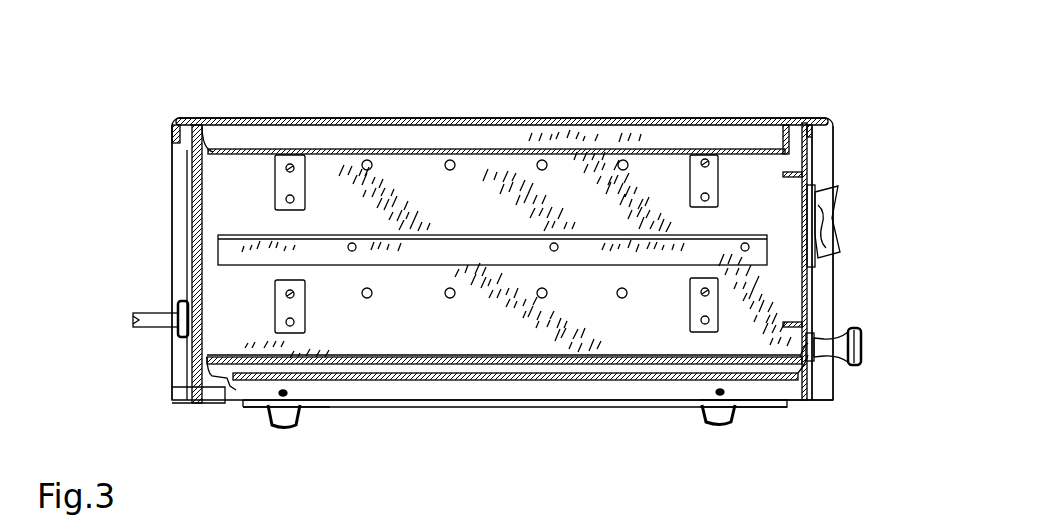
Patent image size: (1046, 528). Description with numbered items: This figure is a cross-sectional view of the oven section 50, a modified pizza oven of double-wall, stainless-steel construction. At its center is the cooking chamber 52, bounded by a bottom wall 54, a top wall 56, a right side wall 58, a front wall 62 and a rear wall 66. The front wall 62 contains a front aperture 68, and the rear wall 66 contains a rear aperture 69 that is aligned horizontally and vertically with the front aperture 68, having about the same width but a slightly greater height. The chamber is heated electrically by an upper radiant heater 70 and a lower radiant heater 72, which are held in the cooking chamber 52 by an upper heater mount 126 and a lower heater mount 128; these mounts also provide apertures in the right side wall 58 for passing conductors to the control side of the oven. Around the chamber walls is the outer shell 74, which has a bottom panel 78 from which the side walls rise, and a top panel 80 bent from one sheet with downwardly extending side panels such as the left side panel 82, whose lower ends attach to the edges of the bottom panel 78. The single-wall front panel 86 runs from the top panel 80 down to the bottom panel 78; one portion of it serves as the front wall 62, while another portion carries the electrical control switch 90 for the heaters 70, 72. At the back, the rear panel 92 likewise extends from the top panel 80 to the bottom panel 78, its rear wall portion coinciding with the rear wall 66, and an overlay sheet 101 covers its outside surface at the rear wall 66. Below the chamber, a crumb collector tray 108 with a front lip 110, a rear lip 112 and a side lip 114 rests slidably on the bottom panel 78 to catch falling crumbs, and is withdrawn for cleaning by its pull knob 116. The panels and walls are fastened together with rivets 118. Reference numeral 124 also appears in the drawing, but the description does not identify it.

The oven section 50 is at (736, 91).
The cooking chamber 52 is at (512, 185).
The bottom wall 54 is at (363, 393).
The top wall 56 is at (258, 149).
The right side wall 58 is at (423, 170).
The front wall 62 is at (808, 308).
The rear wall 66 is at (192, 263).
The front aperture 68 is at (783, 190).
The rear aperture 69 is at (187, 149).
The upper radiant heater 70 is at (643, 126).
The lower radiant heater 72 is at (450, 300).
The outer shell 74 is at (768, 117).
The bottom panel 78 is at (510, 380).
The top panel 80 is at (750, 117).
The left side panel 82 is at (823, 150).
The front panel 86 is at (810, 292).
The electrical control switch 90 is at (816, 225).
The rear panel 92 is at (190, 347).
The overlay sheet 101 is at (190, 290).
The crumb collector tray 108 is at (757, 393).
The front lip 110 is at (831, 439).
The rear lip 112 is at (190, 352).
The side lip 114 is at (308, 408).
The pull knob 116 is at (868, 357).
The rivets 118 is at (193, 198).
The feet 124 is at (272, 420).
The upper heater mount 126 is at (296, 156).
The lower heater mount 128 is at (277, 315).